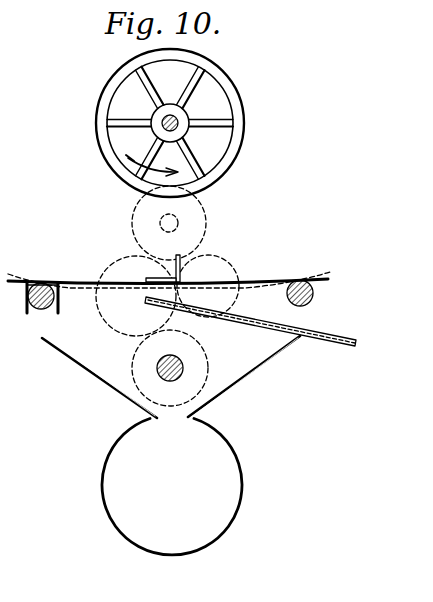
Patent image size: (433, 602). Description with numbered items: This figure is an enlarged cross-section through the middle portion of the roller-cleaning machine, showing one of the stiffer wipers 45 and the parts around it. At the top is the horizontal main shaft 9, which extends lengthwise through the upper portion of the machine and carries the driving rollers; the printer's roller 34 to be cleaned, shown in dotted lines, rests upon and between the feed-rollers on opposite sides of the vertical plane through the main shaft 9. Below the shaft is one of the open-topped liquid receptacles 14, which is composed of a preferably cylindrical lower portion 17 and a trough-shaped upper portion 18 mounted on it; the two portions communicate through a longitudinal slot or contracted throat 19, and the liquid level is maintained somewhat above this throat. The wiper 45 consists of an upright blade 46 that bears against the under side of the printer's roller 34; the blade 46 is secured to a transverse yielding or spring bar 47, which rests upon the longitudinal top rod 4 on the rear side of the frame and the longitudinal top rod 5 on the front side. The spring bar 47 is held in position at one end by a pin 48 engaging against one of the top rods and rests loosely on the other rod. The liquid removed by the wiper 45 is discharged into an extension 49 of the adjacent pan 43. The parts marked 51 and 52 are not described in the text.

The longitudinal top rod 4 is at (40, 279).
The longitudinal top rod 5 is at (312, 299).
The main shaft 9 is at (170, 368).
The liquid receptacle 14 is at (215, 503).
The lower portion of receptacle 17 is at (172, 492).
The trough-shaped upper portion 18 is at (244, 377).
The throat 19 is at (109, 380).
The printer's roller 34 is at (131, 224).
The pan 43 is at (330, 338).
The wiper 45 is at (230, 270).
The upright blade 46 is at (176, 262).
The spring bar 47 is at (100, 282).
The pin 48 is at (55, 312).
The extension of pan 49 is at (150, 303).
The hand wheel 51 is at (121, 77).
The shaft 52 is at (178, 118).